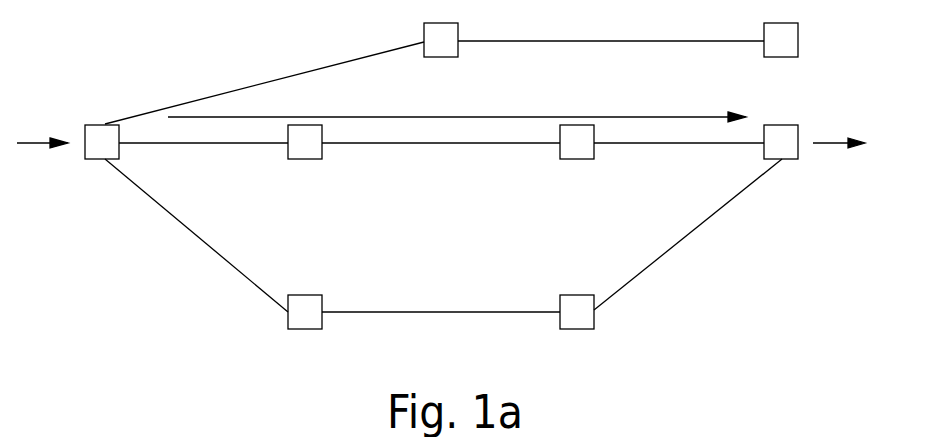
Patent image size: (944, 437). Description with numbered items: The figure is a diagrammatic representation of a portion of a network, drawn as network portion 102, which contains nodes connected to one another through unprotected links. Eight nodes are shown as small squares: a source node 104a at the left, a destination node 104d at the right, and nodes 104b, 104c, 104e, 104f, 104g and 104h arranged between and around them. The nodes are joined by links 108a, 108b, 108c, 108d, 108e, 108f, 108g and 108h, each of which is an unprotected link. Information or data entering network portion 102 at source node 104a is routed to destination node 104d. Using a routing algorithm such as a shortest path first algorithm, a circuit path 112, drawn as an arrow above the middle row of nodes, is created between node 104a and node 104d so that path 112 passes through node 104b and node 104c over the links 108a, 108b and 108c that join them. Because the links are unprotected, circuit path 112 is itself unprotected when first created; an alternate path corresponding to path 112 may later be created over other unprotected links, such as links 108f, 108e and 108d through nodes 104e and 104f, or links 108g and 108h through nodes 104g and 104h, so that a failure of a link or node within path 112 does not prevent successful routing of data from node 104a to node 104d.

The network portion 102 is at (148, 40).
The source node 104a is at (119, 152).
The node 104b is at (322, 152).
The node 104c is at (572, 159).
The destination node 104d is at (790, 159).
The node 104e is at (303, 329).
The node 104f is at (577, 329).
The node 104g is at (438, 57).
The node 104h is at (778, 57).
The link 108a is at (228, 143).
The link 108b is at (453, 143).
The link 108c is at (632, 143).
The link 108d is at (665, 253).
The link 108e is at (392, 312).
The link 108f is at (237, 268).
The link 108g is at (322, 72).
The link 108h is at (593, 41).
The circuit path 112 is at (575, 117).